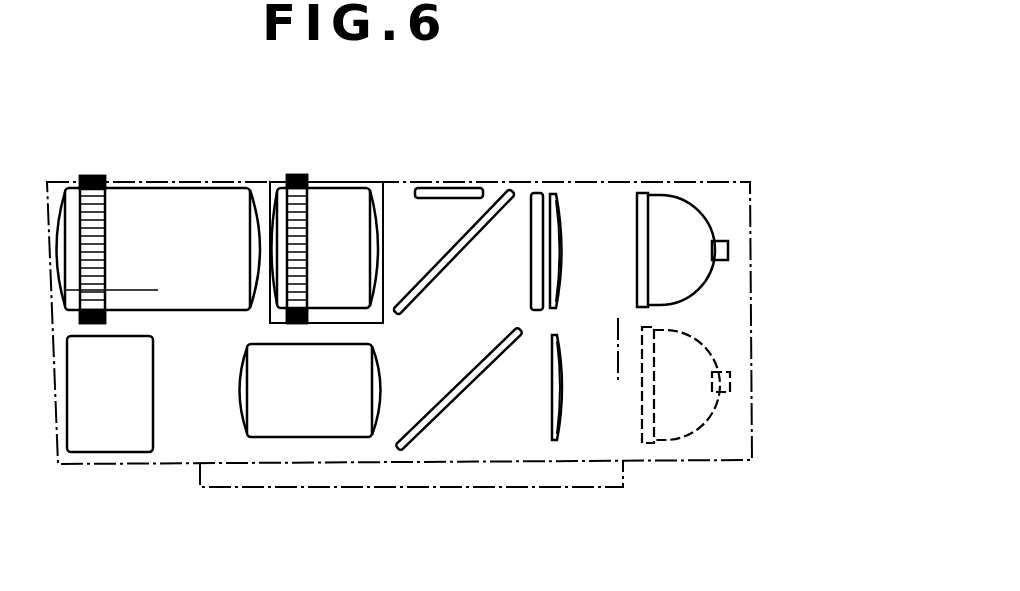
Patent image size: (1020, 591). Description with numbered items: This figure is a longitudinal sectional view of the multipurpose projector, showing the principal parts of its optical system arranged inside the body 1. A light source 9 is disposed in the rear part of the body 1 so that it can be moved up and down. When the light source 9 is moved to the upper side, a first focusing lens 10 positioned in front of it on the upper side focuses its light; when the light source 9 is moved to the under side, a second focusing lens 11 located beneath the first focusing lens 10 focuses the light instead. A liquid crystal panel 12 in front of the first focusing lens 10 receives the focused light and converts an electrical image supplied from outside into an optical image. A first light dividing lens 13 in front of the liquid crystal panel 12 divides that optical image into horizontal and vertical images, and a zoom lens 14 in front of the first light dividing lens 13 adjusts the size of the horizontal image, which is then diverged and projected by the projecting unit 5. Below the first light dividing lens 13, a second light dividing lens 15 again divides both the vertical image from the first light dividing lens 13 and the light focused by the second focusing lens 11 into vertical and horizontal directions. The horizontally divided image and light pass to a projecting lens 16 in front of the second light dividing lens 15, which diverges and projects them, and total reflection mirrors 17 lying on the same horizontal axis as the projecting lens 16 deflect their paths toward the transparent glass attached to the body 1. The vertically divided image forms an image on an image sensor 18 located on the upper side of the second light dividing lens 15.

The body 1 is at (806, 340).
The projecting unit 5 is at (326, 209).
The light source 9 is at (682, 201).
The first focusing lens 10 is at (568, 207).
The second focusing lens 11 is at (558, 445).
The liquid crystal panel 12 is at (530, 208).
The first light dividing lens 13 is at (454, 210).
The zoom lens 14 is at (159, 209).
The second light dividing lens 15 is at (459, 445).
The projecting lens 16 is at (310, 454).
The total reflection mirrors 17 is at (110, 450).
The image sensor 18 is at (448, 151).